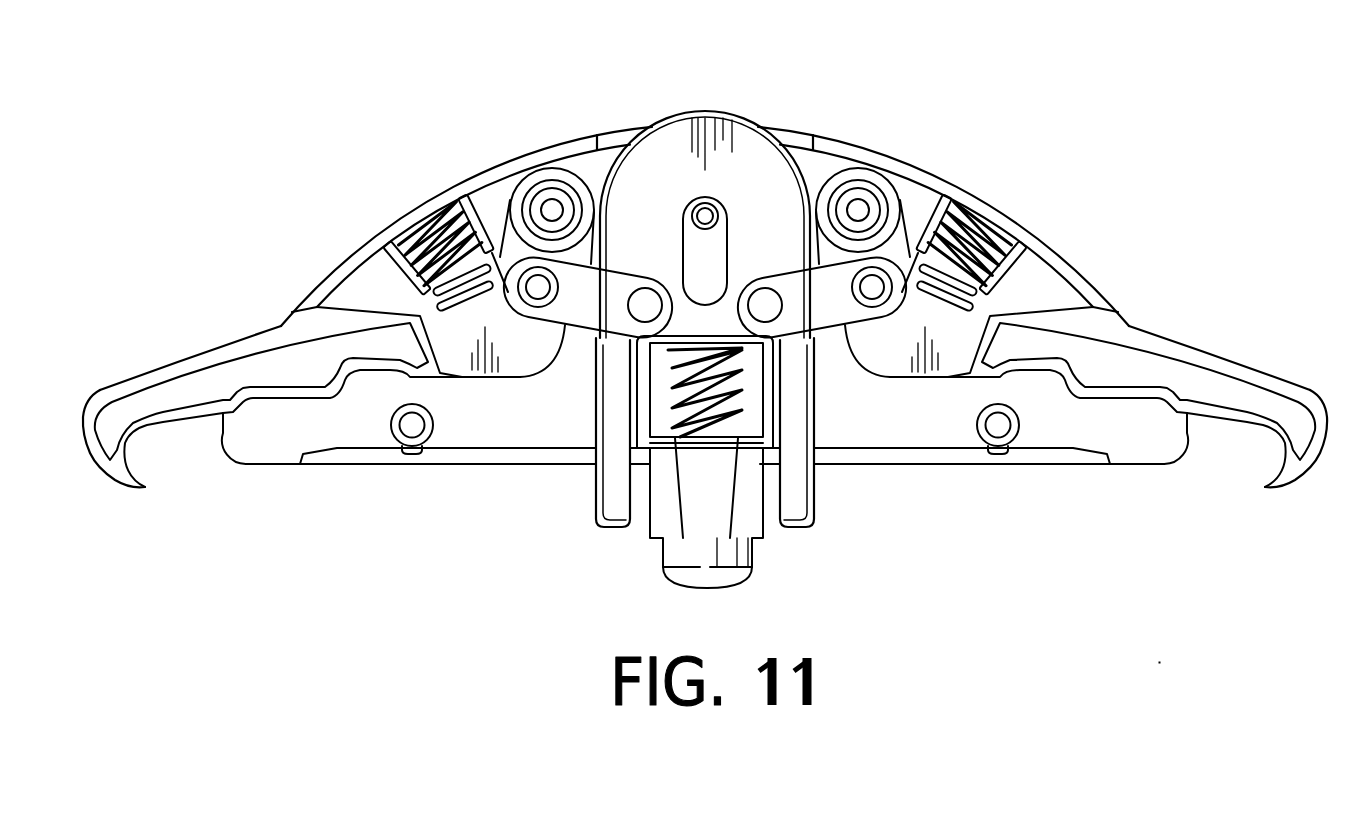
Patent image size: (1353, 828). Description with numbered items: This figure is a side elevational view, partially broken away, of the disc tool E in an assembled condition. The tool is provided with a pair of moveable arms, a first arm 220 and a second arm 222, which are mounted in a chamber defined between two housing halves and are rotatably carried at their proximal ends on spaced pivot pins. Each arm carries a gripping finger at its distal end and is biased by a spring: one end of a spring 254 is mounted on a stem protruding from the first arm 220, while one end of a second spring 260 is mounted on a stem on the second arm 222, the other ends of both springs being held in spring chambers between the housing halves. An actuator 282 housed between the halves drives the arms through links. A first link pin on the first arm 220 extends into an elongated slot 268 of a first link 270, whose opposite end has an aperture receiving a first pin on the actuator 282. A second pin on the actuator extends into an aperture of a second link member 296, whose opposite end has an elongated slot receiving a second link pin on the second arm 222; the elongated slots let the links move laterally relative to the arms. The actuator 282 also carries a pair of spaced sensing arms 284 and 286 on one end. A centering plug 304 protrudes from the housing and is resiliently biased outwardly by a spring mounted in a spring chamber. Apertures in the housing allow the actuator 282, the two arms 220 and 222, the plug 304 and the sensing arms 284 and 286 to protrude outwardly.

The first arm 220 is at (1247, 390).
The second arm 222 is at (200, 383).
The spring 254 is at (975, 245).
The second spring 260 is at (417, 228).
The elongated slot 268 is at (888, 292).
The first link 270 is at (825, 318).
The actuator 282 is at (733, 150).
The sensing arm 284 is at (608, 497).
The sensing arm 286 is at (805, 498).
The second link member 296 is at (573, 330).
The centering plug 304 is at (720, 578).
The disc tool E is at (862, 119).